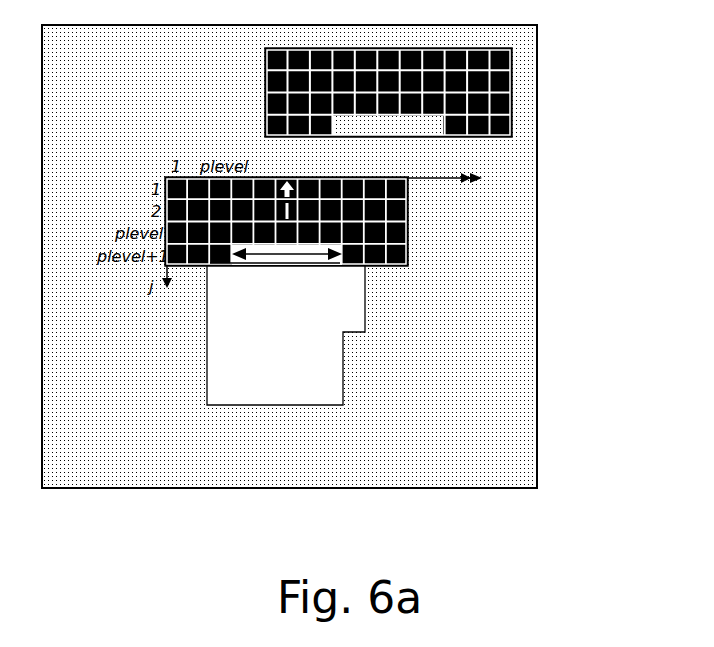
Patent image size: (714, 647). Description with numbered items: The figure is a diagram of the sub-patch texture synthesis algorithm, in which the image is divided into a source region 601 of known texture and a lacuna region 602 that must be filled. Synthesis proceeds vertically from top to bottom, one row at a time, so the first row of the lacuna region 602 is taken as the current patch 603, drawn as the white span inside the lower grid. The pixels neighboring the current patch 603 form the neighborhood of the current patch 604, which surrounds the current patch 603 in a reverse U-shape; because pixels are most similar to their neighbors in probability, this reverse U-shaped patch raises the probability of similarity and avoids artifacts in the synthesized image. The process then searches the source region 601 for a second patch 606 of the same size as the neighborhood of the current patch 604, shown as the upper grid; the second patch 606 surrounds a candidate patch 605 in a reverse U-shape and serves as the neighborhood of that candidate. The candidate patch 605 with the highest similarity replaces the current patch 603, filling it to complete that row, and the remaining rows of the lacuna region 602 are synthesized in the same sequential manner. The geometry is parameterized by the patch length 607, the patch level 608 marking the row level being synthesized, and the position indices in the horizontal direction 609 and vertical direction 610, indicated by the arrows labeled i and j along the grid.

The source region 601 is at (480, 380).
The lacuna region 602 is at (342, 310).
The current patch 603 is at (320, 262).
The neighborhood of the current patch 604 is at (403, 216).
The candidate patch 605 is at (375, 123).
The second patch 606 is at (266, 81).
The patch length 607 is at (283, 264).
The patch level 608 is at (298, 199).
The position index in horizontal direction 609 is at (496, 173).
The position index in vertical direction 610 is at (147, 286).